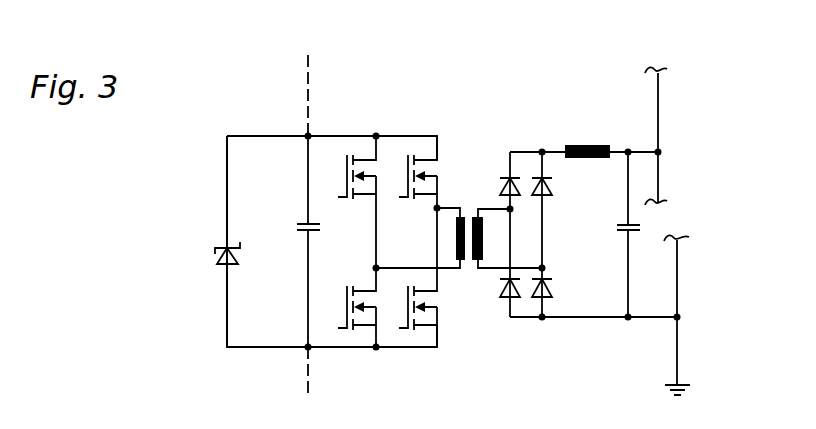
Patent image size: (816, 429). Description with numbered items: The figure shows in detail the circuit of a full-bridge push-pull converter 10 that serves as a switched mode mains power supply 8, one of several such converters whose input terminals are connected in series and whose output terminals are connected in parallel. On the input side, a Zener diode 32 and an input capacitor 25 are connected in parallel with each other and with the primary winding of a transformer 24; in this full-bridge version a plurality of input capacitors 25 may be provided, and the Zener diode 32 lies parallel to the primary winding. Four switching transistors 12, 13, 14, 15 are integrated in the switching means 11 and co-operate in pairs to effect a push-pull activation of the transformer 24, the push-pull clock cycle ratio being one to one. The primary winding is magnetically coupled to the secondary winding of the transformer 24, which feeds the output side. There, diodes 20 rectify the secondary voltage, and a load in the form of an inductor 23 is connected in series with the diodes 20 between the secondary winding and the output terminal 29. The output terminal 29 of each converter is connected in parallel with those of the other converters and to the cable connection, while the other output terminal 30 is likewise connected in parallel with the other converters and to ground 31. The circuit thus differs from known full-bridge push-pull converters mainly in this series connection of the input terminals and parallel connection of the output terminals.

The switched mode mains power supply 8 is at (459, 223).
The full-bridge push-pull converter 10 is at (531, 97).
The switching means 11 is at (426, 349).
The switching transistor 12 is at (430, 178).
The switching transistor 13 is at (366, 172).
The switching transistor 14 is at (368, 330).
The switching transistor 15 is at (428, 330).
The diode 20 is at (508, 283).
The inductor 23 is at (580, 143).
The transformer 24 is at (470, 205).
The input capacitor 25 is at (295, 228).
The output terminal 29 is at (662, 150).
The output terminal 30 is at (680, 316).
The ground 31 is at (685, 390).
The Zener diode 32 is at (222, 252).